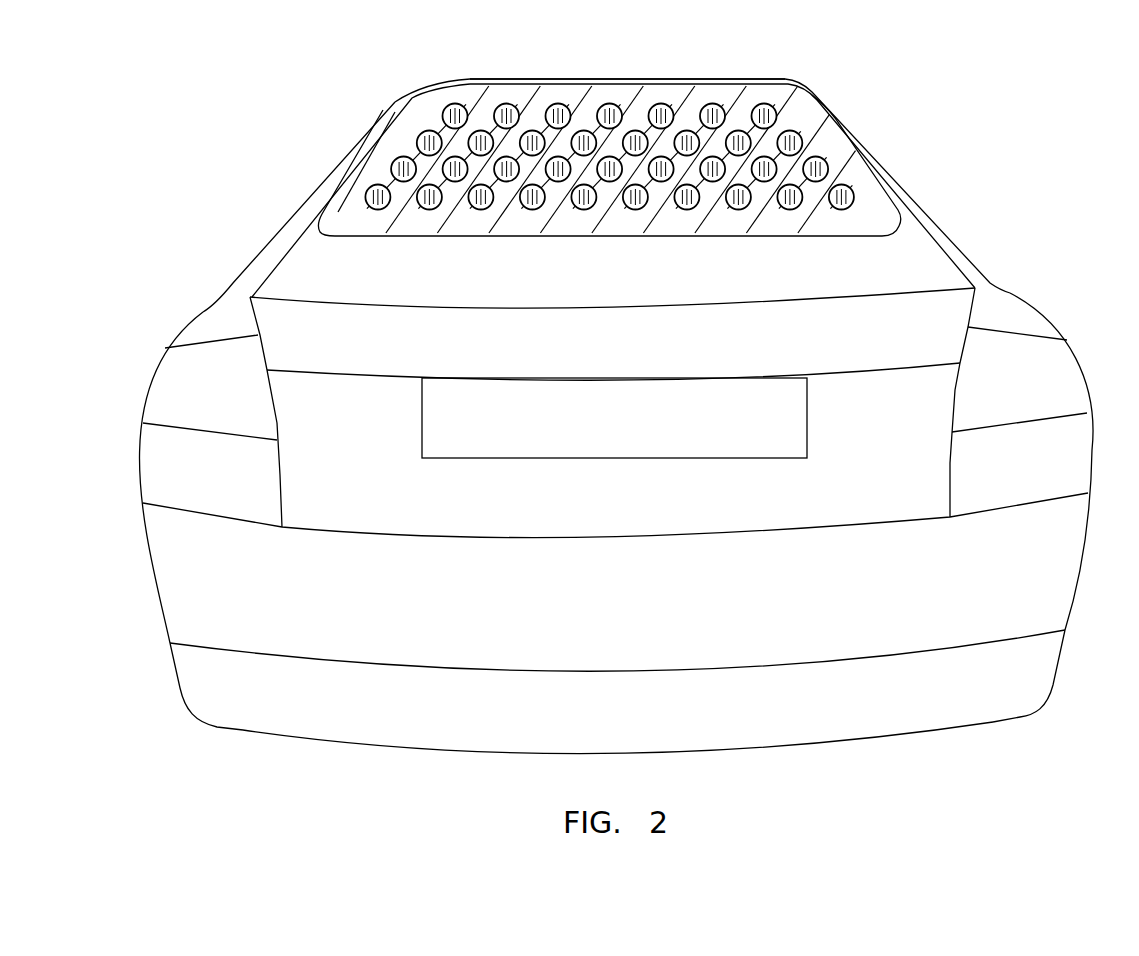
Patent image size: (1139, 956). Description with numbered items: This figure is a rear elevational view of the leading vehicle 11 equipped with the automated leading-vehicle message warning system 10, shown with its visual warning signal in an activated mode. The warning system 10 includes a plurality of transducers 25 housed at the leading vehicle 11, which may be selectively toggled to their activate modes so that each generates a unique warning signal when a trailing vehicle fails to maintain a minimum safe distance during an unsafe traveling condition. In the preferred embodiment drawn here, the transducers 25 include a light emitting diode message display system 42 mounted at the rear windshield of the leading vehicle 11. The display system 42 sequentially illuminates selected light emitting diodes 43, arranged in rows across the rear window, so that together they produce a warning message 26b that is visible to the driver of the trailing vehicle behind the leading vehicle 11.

The automated leading-vehicle message warning system 10 is at (1032, 161).
The leading vehicle 11 is at (1033, 388).
The transducers 25 is at (872, 102).
The visible warning message 26b is at (848, 167).
The light emitting diode message display system 42 is at (758, 92).
The light emitting diodes 43 is at (444, 122).